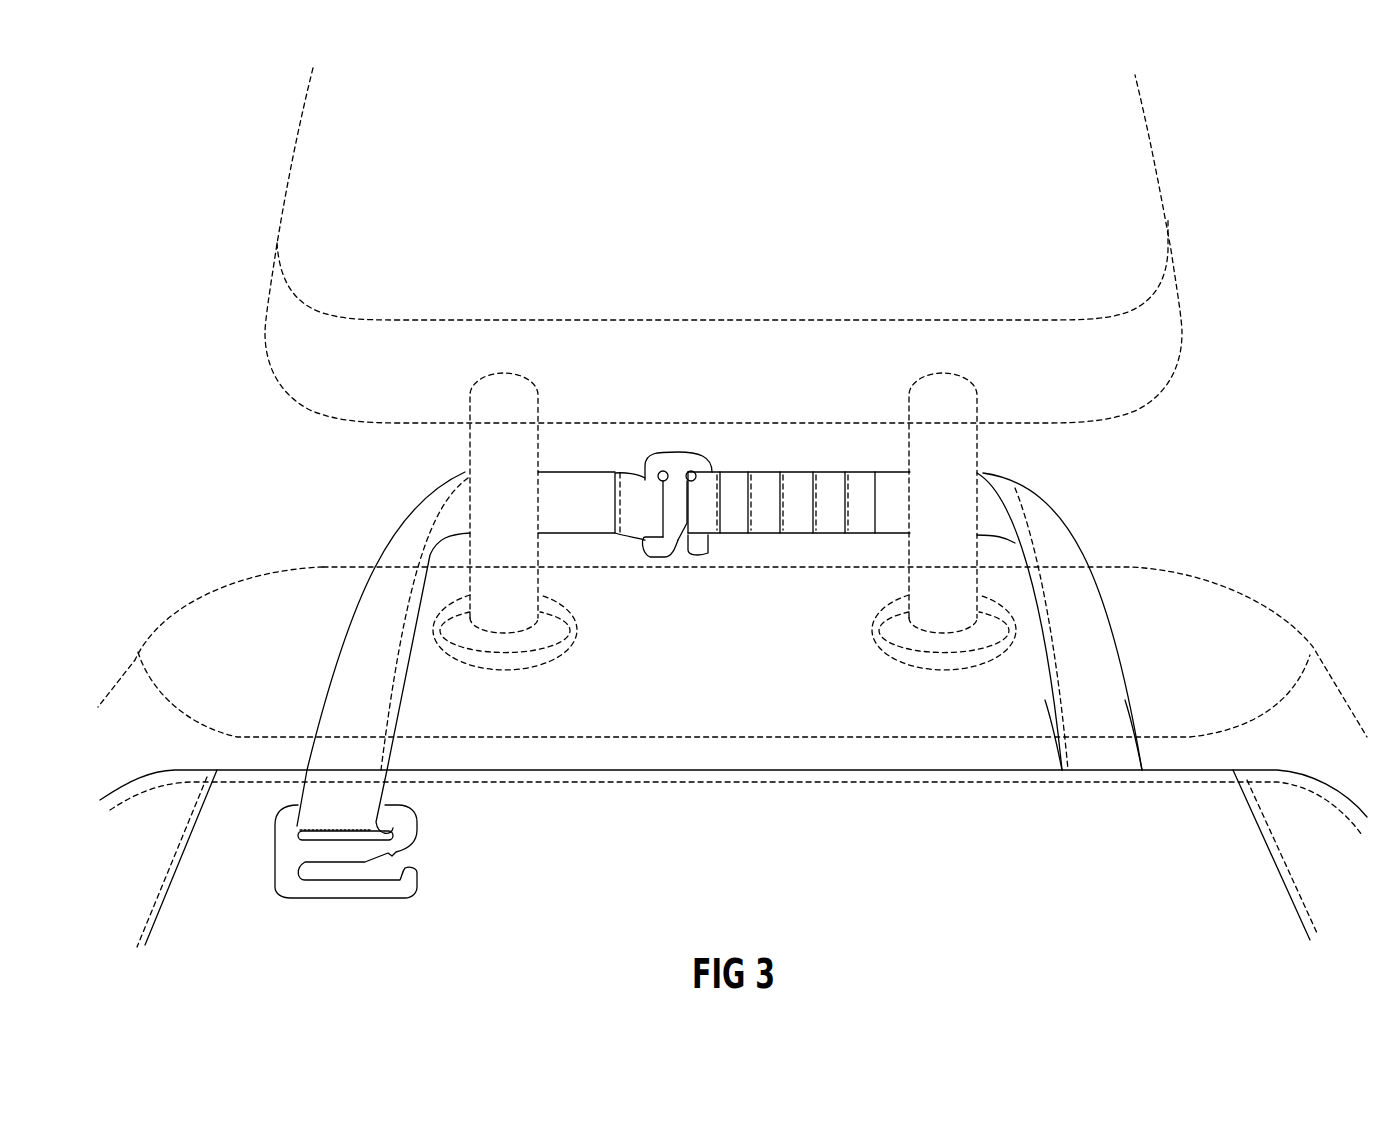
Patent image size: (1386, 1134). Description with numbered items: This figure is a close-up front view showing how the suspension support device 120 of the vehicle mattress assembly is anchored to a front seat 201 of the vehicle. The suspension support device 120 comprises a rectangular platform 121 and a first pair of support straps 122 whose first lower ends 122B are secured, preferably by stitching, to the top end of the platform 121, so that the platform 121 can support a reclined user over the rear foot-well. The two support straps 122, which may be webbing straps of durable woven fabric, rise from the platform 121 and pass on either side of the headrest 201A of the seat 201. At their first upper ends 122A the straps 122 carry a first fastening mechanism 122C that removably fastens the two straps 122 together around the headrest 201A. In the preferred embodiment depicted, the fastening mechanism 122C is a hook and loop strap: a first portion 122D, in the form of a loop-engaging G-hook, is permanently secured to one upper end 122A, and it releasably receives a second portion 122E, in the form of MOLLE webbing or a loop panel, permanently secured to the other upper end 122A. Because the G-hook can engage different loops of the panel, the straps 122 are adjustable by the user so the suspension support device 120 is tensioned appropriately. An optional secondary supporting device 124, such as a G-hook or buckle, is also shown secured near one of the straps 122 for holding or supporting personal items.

The headrest 201A is at (1196, 194).
The front seat 201 is at (1215, 544).
The suspension support device 120 is at (1338, 746).
The rectangular platform 121 is at (237, 798).
The first pair of support straps 122 is at (372, 543).
The first upper ends 122A is at (605, 482).
The first lower ends 122B is at (1087, 760).
The first fastening mechanism 122C is at (733, 465).
The first portion 122D is at (665, 460).
The second portion 122E is at (763, 470).
The secondary supporting device 124 is at (407, 838).